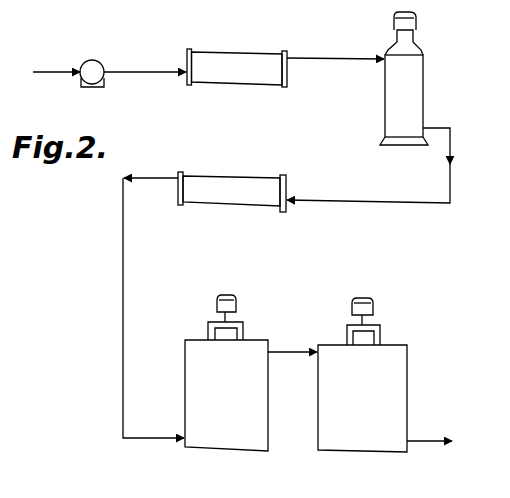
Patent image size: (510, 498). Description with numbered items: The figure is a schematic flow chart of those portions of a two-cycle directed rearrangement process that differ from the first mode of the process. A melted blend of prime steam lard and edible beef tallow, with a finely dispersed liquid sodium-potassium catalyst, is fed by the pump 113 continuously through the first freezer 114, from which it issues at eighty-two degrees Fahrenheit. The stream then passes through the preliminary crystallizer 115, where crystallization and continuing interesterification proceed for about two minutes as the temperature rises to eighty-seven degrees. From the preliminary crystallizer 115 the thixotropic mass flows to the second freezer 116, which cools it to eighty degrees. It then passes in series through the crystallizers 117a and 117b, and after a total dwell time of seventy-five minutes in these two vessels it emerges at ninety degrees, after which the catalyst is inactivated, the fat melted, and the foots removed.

The pump 113 is at (118, 40).
The first freezer 114 is at (262, 35).
The preliminary crystallizer 115 is at (420, 82).
The second freezer 116 is at (227, 206).
The crystallizer 117a is at (226, 373).
The crystallizer 117b is at (362, 375).